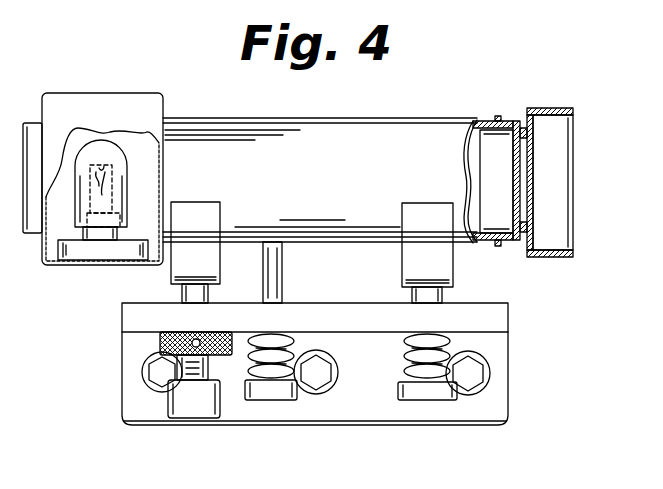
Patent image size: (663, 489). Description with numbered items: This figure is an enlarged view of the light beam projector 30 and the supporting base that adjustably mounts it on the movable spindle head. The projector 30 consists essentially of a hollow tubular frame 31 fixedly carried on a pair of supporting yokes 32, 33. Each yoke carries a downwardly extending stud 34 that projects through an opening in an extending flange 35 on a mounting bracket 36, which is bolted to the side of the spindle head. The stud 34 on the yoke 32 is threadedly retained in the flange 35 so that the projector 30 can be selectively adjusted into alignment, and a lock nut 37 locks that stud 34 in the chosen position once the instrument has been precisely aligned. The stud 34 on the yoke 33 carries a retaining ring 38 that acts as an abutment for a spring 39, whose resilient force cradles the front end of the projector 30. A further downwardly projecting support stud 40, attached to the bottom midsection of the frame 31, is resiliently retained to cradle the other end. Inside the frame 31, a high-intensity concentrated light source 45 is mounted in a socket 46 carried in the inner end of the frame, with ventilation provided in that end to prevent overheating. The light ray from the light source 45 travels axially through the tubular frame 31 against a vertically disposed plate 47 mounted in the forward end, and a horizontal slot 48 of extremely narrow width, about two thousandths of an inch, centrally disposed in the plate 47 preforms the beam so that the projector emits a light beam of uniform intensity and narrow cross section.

The light beam projector 30 is at (432, 103).
The hollow tubular frame 31 is at (302, 147).
The supporting yoke 32 is at (208, 258).
The supporting yoke 33 is at (435, 262).
The stud 34 is at (182, 291).
The extending flange 35 is at (136, 313).
The mounting bracket 36 is at (495, 403).
The lock nut 37 is at (160, 343).
The retaining ring 38 is at (413, 393).
The spring 39 is at (405, 363).
The support stud 40 is at (270, 260).
The light source 45 is at (117, 180).
The socket 46 is at (71, 254).
The plate 47 is at (519, 158).
The horizontal slot 48 is at (520, 186).